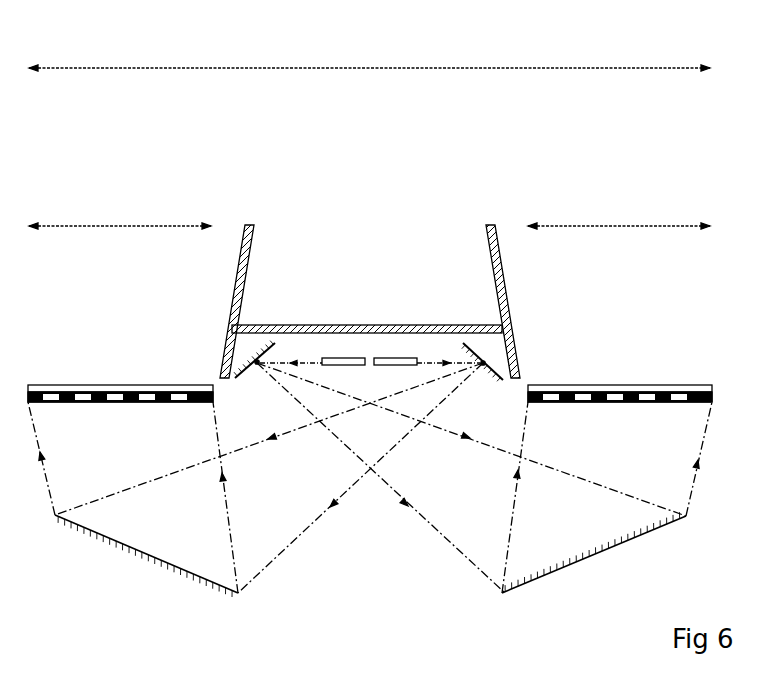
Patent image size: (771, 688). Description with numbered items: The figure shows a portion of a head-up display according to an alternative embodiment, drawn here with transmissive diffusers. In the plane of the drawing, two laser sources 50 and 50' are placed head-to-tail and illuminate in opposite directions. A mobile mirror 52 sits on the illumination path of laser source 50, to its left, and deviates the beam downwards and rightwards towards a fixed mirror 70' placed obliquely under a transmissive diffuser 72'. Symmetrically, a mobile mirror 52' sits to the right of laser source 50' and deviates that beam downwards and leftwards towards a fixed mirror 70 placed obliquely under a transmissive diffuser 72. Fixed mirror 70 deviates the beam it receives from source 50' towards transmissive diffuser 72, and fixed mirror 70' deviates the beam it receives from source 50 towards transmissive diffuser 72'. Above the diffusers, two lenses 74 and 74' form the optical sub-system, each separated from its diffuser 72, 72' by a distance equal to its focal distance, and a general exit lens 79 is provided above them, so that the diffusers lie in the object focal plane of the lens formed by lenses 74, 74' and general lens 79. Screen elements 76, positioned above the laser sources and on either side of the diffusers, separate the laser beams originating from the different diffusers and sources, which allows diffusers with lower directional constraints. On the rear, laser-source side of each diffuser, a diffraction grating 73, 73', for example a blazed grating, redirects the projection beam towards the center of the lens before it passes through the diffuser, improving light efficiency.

The general exit lens 79 is at (655, 67).
The lens 74 is at (120, 204).
The lens 74' is at (619, 204).
The screen elements 76 is at (256, 246).
The mobile mirror 52 is at (263, 335).
The mobile mirror 52' is at (482, 337).
The laser source 50 is at (347, 329).
The laser source 50' is at (398, 329).
The transmissive diffuser 72 is at (120, 370).
The transmissive diffuser 72' is at (620, 365).
The diffraction grating 73 is at (120, 420).
The diffraction grating 73' is at (620, 420).
The fixed mirror 70 is at (146, 566).
The fixed mirror 70' is at (594, 564).